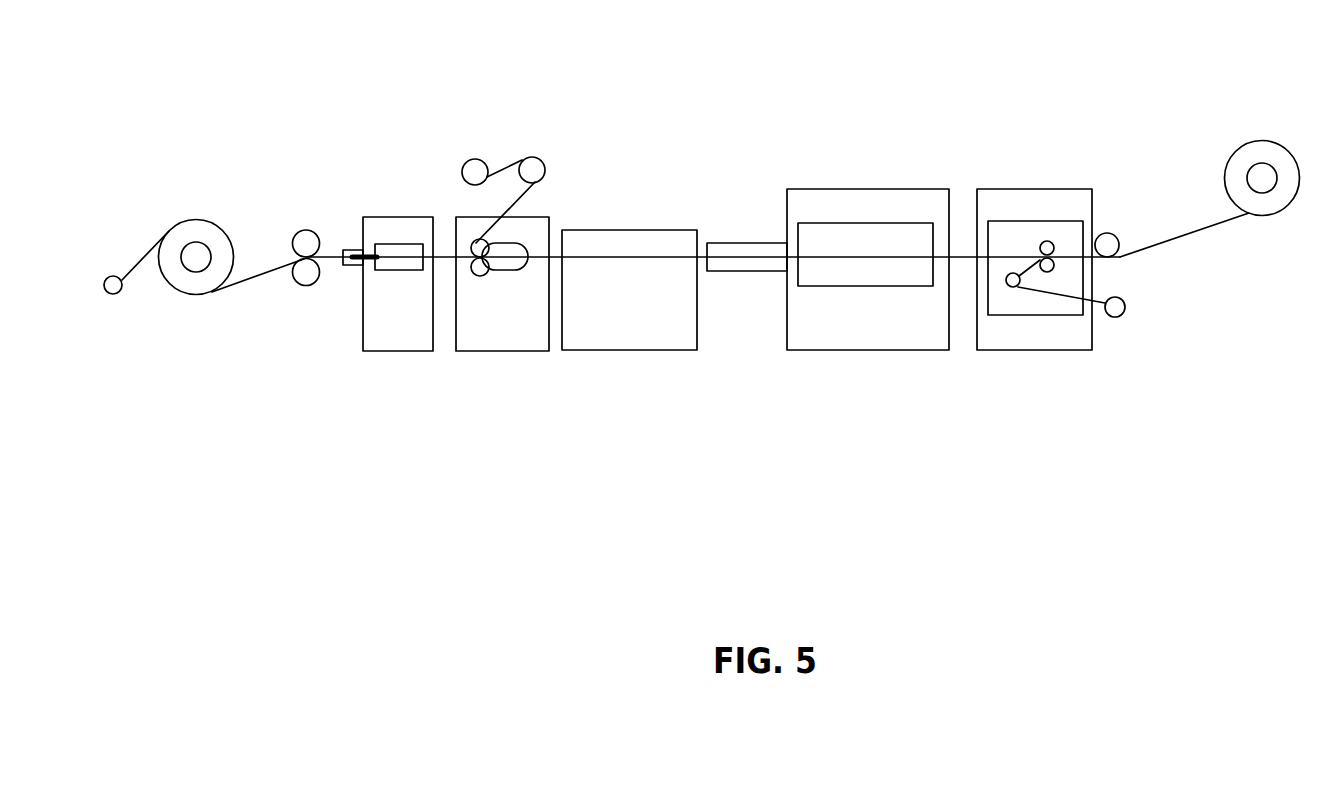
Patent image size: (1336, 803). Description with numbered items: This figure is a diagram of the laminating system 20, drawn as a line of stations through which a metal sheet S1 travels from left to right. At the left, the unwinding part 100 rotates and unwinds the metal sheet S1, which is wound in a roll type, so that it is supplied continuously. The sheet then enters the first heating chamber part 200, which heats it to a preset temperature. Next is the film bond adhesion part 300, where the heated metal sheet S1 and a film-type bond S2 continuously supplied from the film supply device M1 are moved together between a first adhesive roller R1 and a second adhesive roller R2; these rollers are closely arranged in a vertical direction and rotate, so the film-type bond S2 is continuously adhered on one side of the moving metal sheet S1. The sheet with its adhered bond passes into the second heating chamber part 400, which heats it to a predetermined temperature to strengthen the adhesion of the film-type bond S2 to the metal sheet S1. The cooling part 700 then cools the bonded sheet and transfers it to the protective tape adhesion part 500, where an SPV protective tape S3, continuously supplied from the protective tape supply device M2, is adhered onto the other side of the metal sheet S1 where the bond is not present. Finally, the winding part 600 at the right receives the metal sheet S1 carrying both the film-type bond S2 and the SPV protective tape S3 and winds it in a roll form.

The laminating system 20 is at (160, 108).
The unwinding part 100 is at (198, 313).
The first heating chamber part 200 is at (393, 368).
The film bond adhesion part 300 is at (504, 358).
The second heating chamber part 400 is at (657, 363).
The cooling part 700 is at (828, 352).
The protective tape adhesion part 500 is at (1095, 391).
The winding part 600 is at (1265, 235).
The metal sheet S1 is at (267, 273).
The film-type bond S2 is at (565, 198).
The SPV protective tape S3 is at (1052, 298).
The film supply device M1 is at (462, 172).
The protective tape supply device M2 is at (1159, 342).
The first adhesive roller R1 is at (478, 241).
The second adhesive roller R2 is at (478, 276).